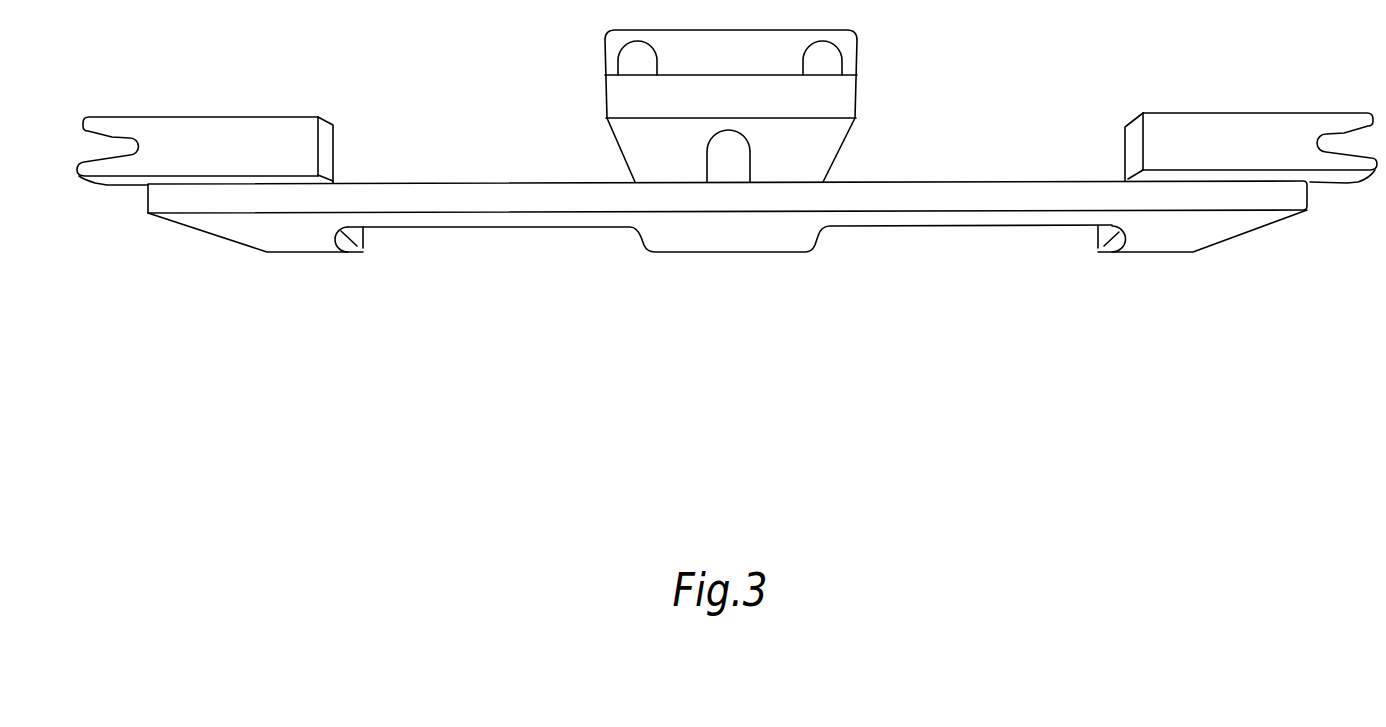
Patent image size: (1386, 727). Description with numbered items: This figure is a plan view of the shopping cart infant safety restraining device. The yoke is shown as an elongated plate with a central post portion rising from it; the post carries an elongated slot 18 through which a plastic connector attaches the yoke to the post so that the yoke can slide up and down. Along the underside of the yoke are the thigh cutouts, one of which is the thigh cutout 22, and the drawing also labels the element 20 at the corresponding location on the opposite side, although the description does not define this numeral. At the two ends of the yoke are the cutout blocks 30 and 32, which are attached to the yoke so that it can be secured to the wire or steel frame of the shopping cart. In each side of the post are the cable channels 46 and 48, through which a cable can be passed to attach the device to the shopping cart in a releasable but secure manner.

The elongated slot 18 is at (733, 160).
The left hook 20 is at (417, 235).
The thigh cutout 22 is at (1045, 233).
The cutout block 30 is at (190, 132).
The cutout block 32 is at (1278, 128).
The cable channel 46 is at (633, 58).
The cable channel 48 is at (827, 62).